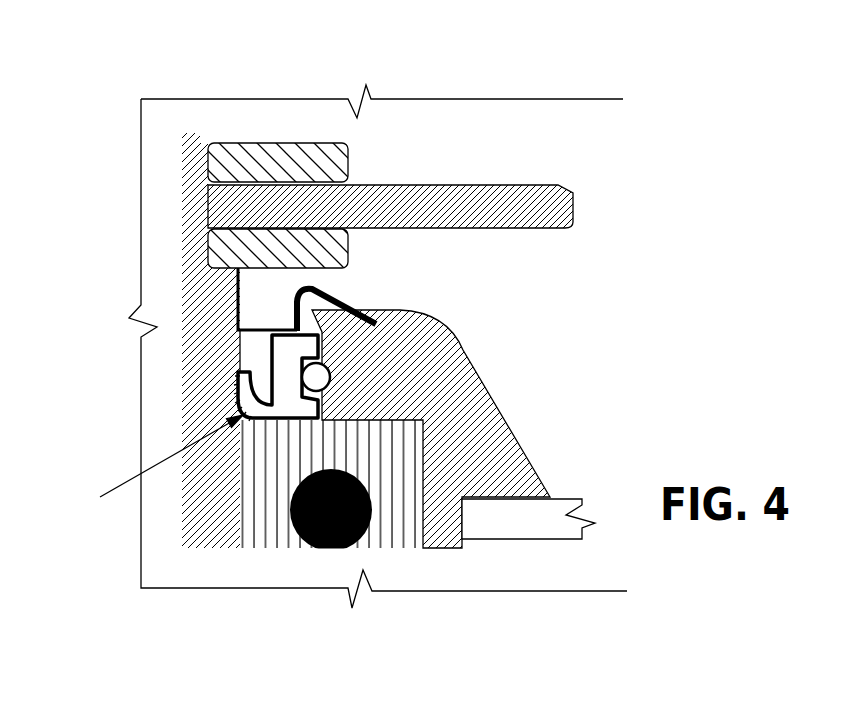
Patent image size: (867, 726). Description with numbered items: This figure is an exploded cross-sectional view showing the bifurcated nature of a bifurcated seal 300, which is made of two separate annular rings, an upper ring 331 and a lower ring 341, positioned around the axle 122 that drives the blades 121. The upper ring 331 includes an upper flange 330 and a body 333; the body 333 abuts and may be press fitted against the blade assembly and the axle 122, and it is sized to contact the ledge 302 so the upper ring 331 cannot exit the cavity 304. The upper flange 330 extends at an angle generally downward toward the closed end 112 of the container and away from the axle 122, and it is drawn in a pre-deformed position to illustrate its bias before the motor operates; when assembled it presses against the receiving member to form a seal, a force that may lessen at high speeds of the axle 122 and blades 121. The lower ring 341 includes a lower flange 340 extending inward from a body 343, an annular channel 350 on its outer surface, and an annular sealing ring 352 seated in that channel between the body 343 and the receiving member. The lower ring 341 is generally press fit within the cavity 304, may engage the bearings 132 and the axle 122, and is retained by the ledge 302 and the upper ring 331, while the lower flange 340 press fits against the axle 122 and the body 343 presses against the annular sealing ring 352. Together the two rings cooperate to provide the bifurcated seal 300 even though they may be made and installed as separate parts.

The bifurcated seal 300 is at (690, 84).
The axle 122 is at (190, 162).
The body 333 is at (272, 298).
The blades 121 is at (525, 203).
The upper ring 331 is at (416, 283).
The bearings 132 is at (408, 533).
The closed end 112 is at (568, 500).
The ledge 302 is at (323, 325).
The upper flange 330 is at (338, 285).
The cavity 304 is at (263, 359).
The annular channel 350 is at (337, 375).
The body 343 is at (288, 352).
The lower flange 340 is at (250, 398).
The annular sealing ring 352 is at (323, 370).
The lower ring 341 is at (150, 461).